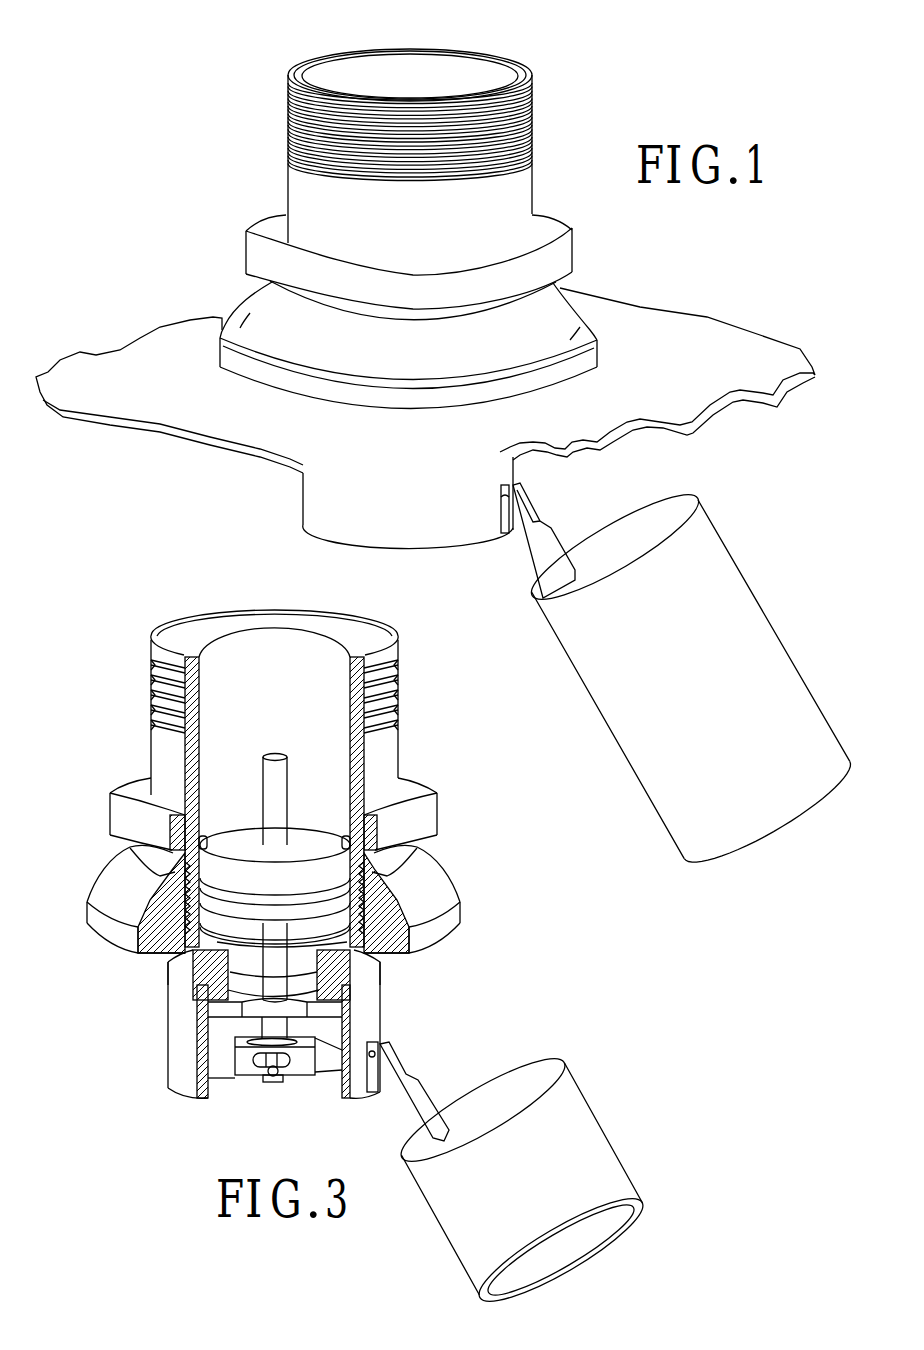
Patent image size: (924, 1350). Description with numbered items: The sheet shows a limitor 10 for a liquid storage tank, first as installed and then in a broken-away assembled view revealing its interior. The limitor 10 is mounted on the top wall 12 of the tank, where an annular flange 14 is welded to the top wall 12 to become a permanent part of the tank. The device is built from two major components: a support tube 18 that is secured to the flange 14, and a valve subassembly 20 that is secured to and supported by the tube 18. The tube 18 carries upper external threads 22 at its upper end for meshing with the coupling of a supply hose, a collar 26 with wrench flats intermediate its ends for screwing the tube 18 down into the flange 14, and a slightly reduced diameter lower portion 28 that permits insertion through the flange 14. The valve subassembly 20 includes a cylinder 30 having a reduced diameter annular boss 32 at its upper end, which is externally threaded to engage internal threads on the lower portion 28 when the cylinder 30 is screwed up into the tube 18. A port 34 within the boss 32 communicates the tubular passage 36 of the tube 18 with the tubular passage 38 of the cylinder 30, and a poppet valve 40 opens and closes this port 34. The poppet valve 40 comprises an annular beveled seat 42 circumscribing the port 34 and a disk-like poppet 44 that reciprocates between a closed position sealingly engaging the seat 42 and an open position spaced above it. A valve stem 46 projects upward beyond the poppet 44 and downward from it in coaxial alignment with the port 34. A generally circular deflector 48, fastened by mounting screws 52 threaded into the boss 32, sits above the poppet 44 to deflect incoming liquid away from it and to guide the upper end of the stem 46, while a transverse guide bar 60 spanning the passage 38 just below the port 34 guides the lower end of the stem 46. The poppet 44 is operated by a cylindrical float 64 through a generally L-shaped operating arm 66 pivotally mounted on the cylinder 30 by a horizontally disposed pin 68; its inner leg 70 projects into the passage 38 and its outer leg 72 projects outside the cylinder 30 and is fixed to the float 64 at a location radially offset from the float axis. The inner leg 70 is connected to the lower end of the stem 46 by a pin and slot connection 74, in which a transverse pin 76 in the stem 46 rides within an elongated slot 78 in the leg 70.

In FIG. 1, the limitor 10 is at (556, 85).
In FIG. 3, the limitor 10 is at (140, 632).
In FIG. 1, the top wall 12 is at (707, 341).
In FIG. 1, the annular flange 14 is at (575, 333).
In FIG. 3, the annular flange 14 is at (450, 922).
In FIG. 1, the support tube 18 is at (537, 188).
In FIG. 3, the support tube 18 is at (404, 750).
In FIG. 1, the valve subassembly 20 is at (300, 510).
In FIG. 3, the valve subassembly 20 is at (405, 1013).
In FIG. 1, the upper external threads 22 is at (287, 113).
In FIG. 3, the upper external threads 22 is at (152, 678).
In FIG. 1, the collar 26 is at (555, 262).
In FIG. 3, the collar 26 is at (430, 815).
In FIG. 3, the lower portion 28 is at (178, 978).
In FIG. 1, the cylinder 30 is at (400, 528).
In FIG. 3, the cylinder 30 is at (175, 1047).
In FIG. 3, the annular boss 32 is at (353, 967).
In FIG. 3, the port 34 is at (240, 942).
In FIG. 1, the tubular passage 36 is at (335, 72).
In FIG. 3, the tubular passage 36 is at (196, 633).
In FIG. 3, the tubular passage 38 is at (222, 1078).
In FIG. 3, the poppet valve 40 is at (232, 820).
In FIG. 3, the beveled seat 42 is at (130, 945).
In FIG. 3, the poppet 44 is at (115, 895).
In FIG. 3, the valve stem 46 is at (282, 796).
In FIG. 3, the deflector 48 is at (315, 838).
In FIG. 3, the mounting screws 52 is at (413, 852).
In FIG. 3, the guide bar 60 is at (215, 1010).
In FIG. 1, the float 64 is at (740, 578).
In FIG. 3, the float 64 is at (610, 1140).
In FIG. 1, the operating arm 66 is at (538, 493).
In FIG. 3, the operating arm 66 is at (404, 1062).
In FIG. 1, the pin 68 is at (518, 540).
In FIG. 3, the pin 68 is at (385, 1092).
In FIG. 3, the inner leg 70 is at (330, 1065).
In FIG. 1, the outer leg 72 is at (547, 568).
In FIG. 3, the outer leg 72 is at (415, 1128).
In FIG. 3, the pin and slot connection 74 is at (247, 1085).
In FIG. 3, the transverse pin 76 is at (272, 1082).
In FIG. 3, the elongated slot 78 is at (300, 1068).